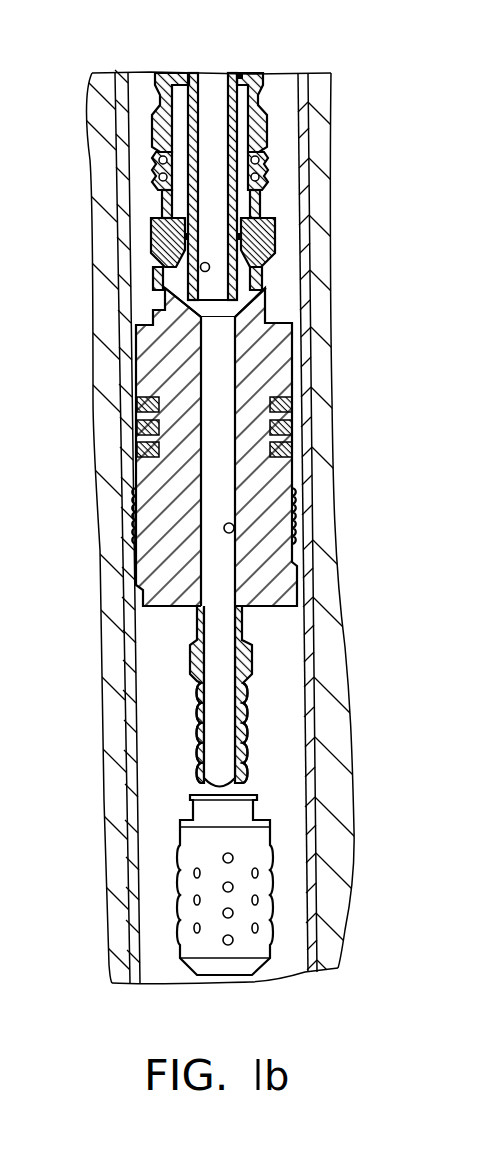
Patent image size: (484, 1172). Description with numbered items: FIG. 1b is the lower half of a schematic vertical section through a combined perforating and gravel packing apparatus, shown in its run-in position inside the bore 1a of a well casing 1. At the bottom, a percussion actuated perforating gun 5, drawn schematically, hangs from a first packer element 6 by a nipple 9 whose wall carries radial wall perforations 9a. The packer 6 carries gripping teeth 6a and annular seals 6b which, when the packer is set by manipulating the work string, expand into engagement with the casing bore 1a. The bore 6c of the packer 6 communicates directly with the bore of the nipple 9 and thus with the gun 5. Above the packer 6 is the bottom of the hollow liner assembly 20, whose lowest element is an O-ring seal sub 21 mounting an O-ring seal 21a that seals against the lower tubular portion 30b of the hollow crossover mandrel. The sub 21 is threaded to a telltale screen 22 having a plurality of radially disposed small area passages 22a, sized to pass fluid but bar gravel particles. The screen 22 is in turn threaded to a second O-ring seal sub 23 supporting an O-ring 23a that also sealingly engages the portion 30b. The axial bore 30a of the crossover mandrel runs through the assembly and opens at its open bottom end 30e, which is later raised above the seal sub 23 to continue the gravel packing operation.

The well casing 1 is at (308, 122).
The bore of well casing 1a is at (300, 83).
The liner assembly 20 is at (286, 158).
The O-ring seal sub 21 is at (276, 228).
The O-ring seal 21a is at (275, 252).
The telltale screen 22 is at (270, 163).
The small area passages 22a is at (260, 179).
The second O-ring seal sub 23 is at (262, 72).
The O-ring 23a is at (240, 72).
The axial bore of crossover mandrel 30a is at (200, 268).
The lower tubular portion of crossover mandrel 30b is at (262, 197).
The open bottom end of crossover mandrel 30e is at (226, 300).
The percussion actuated perforating gun 5 is at (270, 837).
The first packer element 6 is at (294, 568).
The gripping teeth 6a is at (296, 512).
The annular seals 6b is at (292, 449).
The bore of lower packer 6c is at (234, 535).
The nipple 9 is at (254, 667).
The radial wall perforations 9a is at (248, 742).